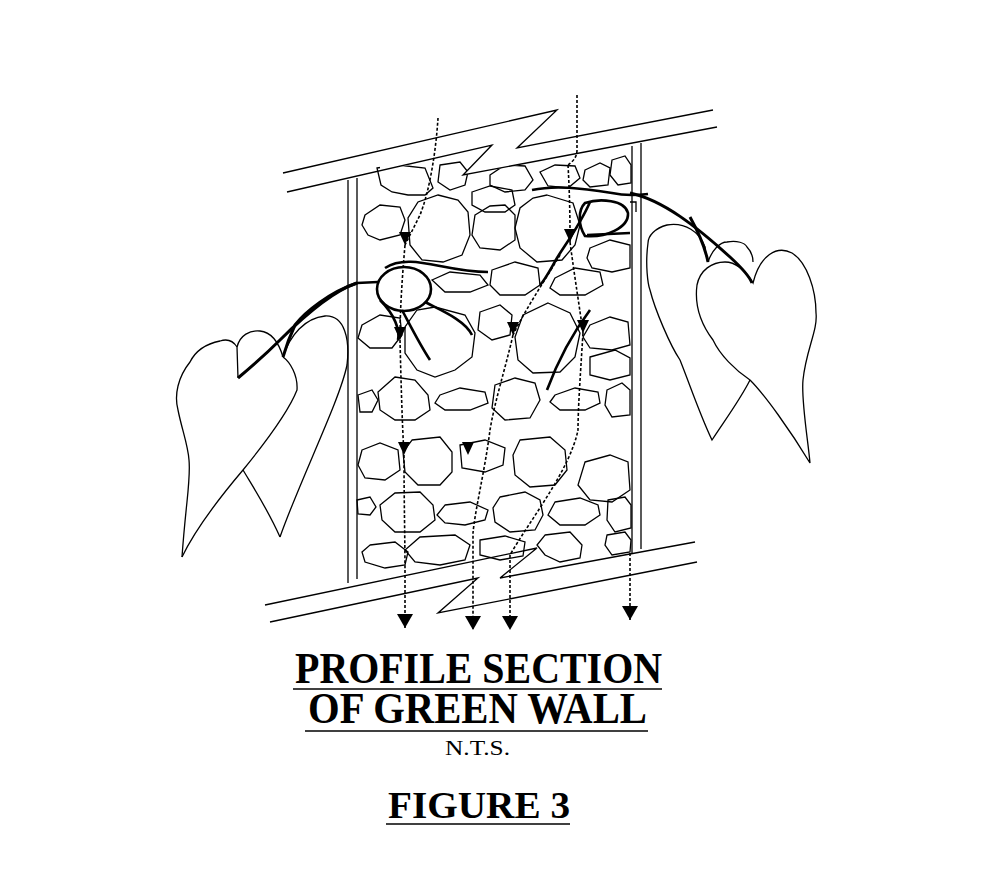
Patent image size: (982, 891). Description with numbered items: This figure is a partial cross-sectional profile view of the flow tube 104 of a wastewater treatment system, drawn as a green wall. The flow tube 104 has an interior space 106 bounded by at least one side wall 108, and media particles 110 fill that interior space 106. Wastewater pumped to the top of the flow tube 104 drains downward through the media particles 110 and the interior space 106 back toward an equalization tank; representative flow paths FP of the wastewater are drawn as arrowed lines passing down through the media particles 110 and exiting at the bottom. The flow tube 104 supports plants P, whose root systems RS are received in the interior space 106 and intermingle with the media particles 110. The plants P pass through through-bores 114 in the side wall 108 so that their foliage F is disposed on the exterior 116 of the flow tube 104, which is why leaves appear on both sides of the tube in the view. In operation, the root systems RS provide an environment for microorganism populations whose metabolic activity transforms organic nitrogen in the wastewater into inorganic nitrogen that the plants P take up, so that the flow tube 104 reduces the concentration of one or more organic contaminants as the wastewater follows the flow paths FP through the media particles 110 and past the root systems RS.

The flow tube 104 is at (712, 192).
The interior space 106 is at (368, 180).
The side wall 108 is at (648, 500).
The media particles 110 is at (605, 443).
The through-bores 114 is at (647, 185).
The exterior 116 is at (642, 403).
The root systems RS is at (370, 272).
The plants P is at (272, 331).
The foliage F is at (797, 253).
The flow paths FP is at (438, 118).